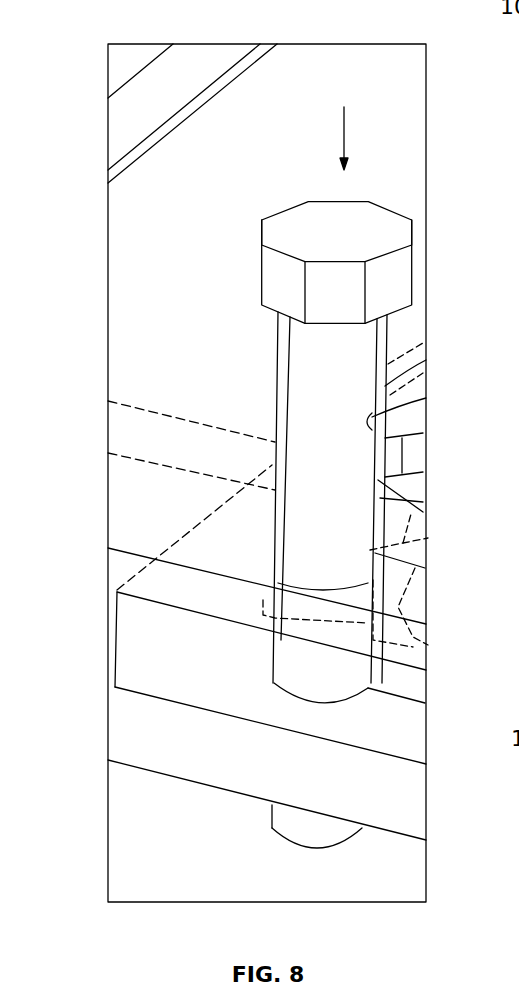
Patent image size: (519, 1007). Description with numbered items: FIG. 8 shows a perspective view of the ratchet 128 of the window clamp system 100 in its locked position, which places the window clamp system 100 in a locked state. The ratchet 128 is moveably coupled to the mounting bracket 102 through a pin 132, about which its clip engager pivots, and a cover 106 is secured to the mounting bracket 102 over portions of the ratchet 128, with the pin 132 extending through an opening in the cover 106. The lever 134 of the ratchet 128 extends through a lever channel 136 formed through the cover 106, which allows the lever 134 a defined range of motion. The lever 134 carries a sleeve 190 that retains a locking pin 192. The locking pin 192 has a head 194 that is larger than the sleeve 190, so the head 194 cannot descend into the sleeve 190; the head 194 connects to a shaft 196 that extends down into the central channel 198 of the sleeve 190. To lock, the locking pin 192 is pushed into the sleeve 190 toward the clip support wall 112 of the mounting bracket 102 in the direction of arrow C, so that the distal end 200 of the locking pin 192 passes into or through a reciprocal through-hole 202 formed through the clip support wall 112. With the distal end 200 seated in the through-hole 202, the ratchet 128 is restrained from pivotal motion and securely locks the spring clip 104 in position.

The window clamp system 100 is at (108, 24).
The mounting bracket 102 is at (124, 757).
The spring clip 104 is at (124, 666).
The cover 106 is at (123, 322).
The clip support wall 112 is at (132, 725).
The ratchet 128 is at (407, 680).
The pin 132 is at (427, 580).
The lever 134 is at (275, 445).
The lever channel 136 is at (418, 450).
The sleeve 190 is at (426, 360).
The locking pin 192 is at (380, 245).
The head 194 is at (373, 233).
The shaft 196 is at (415, 512).
The central channel 198 is at (426, 398).
The distal end 200 is at (308, 825).
The through-hole 202 is at (340, 703).
The arrow C is at (345, 143).